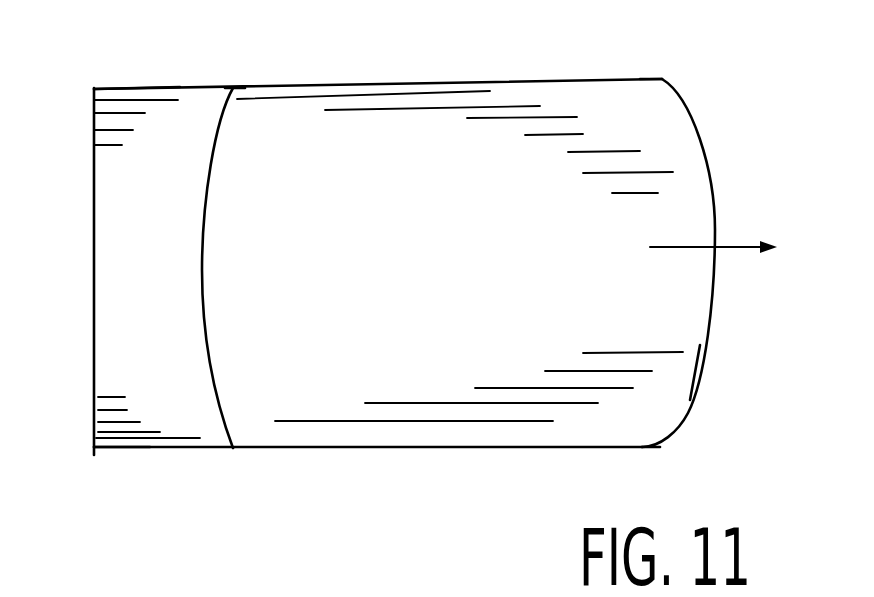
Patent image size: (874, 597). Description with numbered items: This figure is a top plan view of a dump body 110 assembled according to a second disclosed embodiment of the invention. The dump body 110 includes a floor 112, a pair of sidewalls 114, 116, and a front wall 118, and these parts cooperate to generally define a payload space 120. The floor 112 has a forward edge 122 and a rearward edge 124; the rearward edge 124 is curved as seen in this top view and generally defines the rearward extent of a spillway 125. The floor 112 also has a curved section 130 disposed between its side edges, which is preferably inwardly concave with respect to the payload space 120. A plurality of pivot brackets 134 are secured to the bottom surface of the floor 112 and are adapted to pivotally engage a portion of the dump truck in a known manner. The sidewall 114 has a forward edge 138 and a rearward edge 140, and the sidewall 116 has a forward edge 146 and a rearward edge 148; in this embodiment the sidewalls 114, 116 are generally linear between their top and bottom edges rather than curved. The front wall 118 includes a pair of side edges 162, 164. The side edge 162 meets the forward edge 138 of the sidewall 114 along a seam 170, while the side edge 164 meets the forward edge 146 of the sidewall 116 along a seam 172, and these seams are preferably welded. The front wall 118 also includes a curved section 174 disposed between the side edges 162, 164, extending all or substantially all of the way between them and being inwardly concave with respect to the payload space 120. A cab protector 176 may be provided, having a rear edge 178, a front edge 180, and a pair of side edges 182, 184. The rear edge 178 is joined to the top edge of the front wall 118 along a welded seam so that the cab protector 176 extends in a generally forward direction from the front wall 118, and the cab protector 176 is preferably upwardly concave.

The dump body 110 is at (644, 52).
The floor 112 is at (610, 232).
The sidewall 114 is at (428, 446).
The sidewall 116 is at (427, 80).
The front wall 118 is at (203, 272).
The payload space 120 is at (557, 200).
The forward edge 122 is at (217, 380).
The rearward edge 124 is at (703, 355).
The spillway 125 is at (730, 250).
The curved section 130 is at (423, 271).
The pivot brackets 134 is at (253, 14).
The forward edge 138 is at (233, 448).
The rearward edge 140 is at (642, 447).
The forward edge 146 is at (233, 88).
The rearward edge 148 is at (662, 79).
The side edge 162 is at (233, 448).
The side edge 164 is at (233, 88).
The seam 170 is at (233, 448).
The seam 172 is at (233, 88).
The curved section 174 is at (203, 195).
The cab protector 176 is at (122, 332).
The rear edge 178 is at (209, 147).
The front edge 180 is at (93, 248).
The side edge 182 is at (153, 90).
The side edge 184 is at (170, 448).